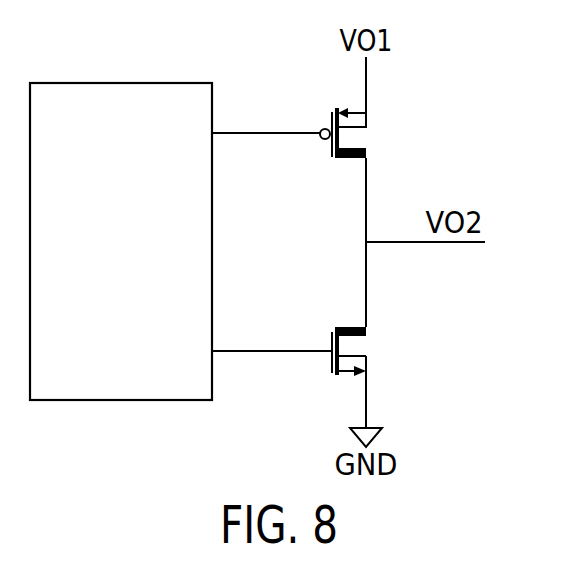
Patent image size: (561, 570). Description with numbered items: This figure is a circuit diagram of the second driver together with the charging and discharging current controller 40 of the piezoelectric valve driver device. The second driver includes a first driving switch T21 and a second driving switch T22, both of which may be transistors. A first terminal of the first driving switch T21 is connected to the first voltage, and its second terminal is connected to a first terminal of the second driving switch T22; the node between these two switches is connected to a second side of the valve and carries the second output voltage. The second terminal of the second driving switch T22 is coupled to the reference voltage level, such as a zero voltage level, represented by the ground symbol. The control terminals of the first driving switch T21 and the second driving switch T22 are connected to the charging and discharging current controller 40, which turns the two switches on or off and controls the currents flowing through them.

The charging and discharging current controller 40 is at (121, 83).
The first driving switch T21 is at (328, 148).
The second driving switch T22 is at (328, 363).